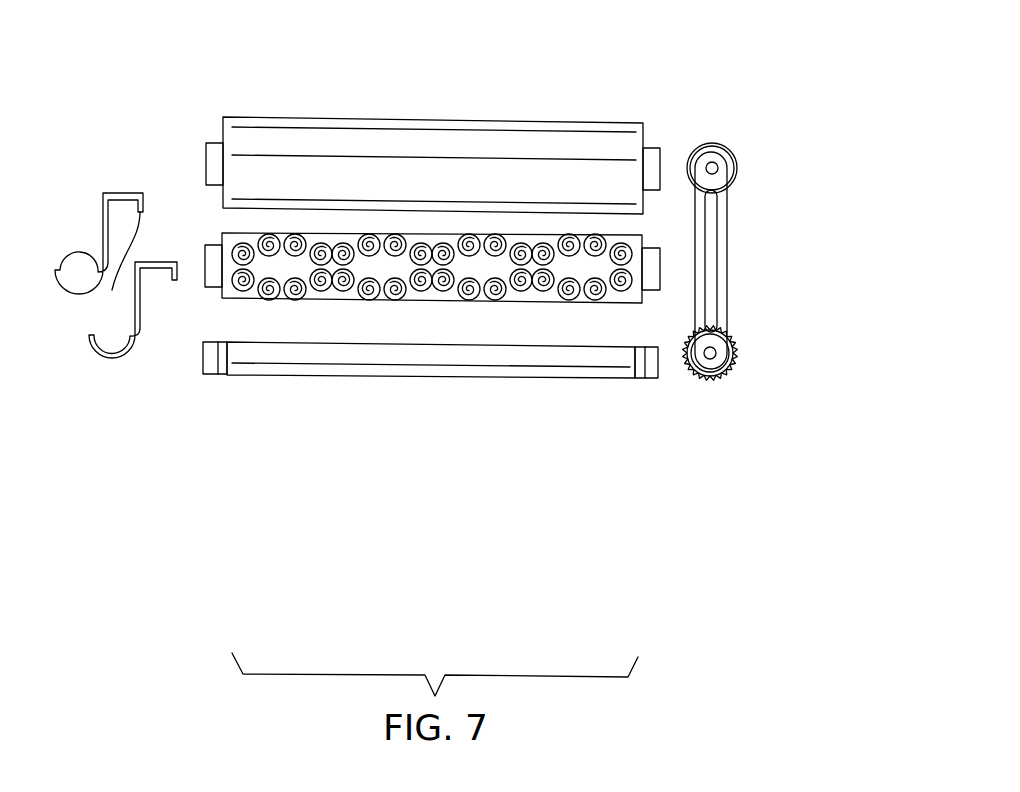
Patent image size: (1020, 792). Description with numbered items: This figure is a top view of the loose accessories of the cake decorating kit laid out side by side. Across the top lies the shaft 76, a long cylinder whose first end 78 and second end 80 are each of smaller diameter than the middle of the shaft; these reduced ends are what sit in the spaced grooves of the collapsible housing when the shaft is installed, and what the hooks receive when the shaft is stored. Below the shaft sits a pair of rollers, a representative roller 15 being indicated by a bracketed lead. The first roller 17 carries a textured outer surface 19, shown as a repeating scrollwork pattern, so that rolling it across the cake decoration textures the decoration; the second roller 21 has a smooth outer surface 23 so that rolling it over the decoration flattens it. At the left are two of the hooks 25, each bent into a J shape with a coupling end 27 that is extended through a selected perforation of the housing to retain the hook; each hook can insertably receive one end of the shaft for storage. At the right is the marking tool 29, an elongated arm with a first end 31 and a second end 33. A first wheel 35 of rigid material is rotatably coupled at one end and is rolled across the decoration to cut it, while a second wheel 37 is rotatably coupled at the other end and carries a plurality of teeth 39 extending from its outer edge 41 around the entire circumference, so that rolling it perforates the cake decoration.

The roller 15 is at (190, 302).
The first roller 17 is at (221, 236).
The textured outer surface 19 is at (604, 266).
The second roller 21 is at (657, 380).
The smooth outer surface 23 is at (495, 355).
The hook 25 is at (103, 192).
The coupling end 27 is at (133, 310).
The marking tool 29 is at (752, 262).
The first end 31 is at (720, 150).
The second end 33 is at (718, 353).
The first wheel 35 is at (701, 132).
The second wheel 37 is at (746, 376).
The teeth 39 is at (730, 338).
The outer edge 41 is at (720, 378).
The shaft 76 is at (457, 104).
The first end 78 is at (664, 147).
The second end 80 is at (206, 146).